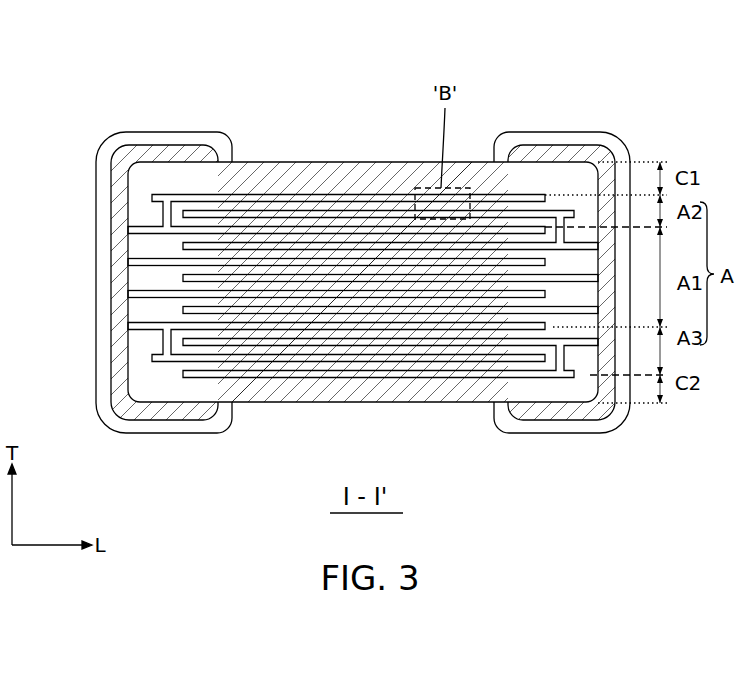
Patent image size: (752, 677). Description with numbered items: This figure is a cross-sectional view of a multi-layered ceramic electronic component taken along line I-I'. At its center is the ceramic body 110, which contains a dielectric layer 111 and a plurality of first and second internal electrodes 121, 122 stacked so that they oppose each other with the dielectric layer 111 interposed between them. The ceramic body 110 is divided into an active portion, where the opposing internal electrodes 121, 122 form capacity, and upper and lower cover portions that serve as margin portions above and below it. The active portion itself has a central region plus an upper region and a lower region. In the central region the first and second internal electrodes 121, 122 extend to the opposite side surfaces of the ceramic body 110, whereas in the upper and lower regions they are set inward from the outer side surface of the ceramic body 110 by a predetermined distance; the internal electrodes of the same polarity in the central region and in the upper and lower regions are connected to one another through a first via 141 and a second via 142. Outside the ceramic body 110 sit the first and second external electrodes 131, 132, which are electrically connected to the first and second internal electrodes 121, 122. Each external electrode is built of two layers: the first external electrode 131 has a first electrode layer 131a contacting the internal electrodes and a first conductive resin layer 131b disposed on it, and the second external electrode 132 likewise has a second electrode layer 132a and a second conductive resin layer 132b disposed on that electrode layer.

The ceramic body 110 is at (338, 161).
The dielectric layer 111 is at (155, 214).
The first internal electrode 121 is at (336, 284).
The second internal electrode 122 is at (311, 347).
The first external electrode 131 is at (251, 234).
The first electrode layer 131a is at (78, 72).
The first conductive resin layer 131b is at (119, 148).
The second external electrode 132 is at (476, 234).
The second electrode layer 132a is at (648, 72).
The second conductive resin layer 132b is at (594, 145).
The first via 141 is at (164, 343).
The second via 142 is at (563, 357).